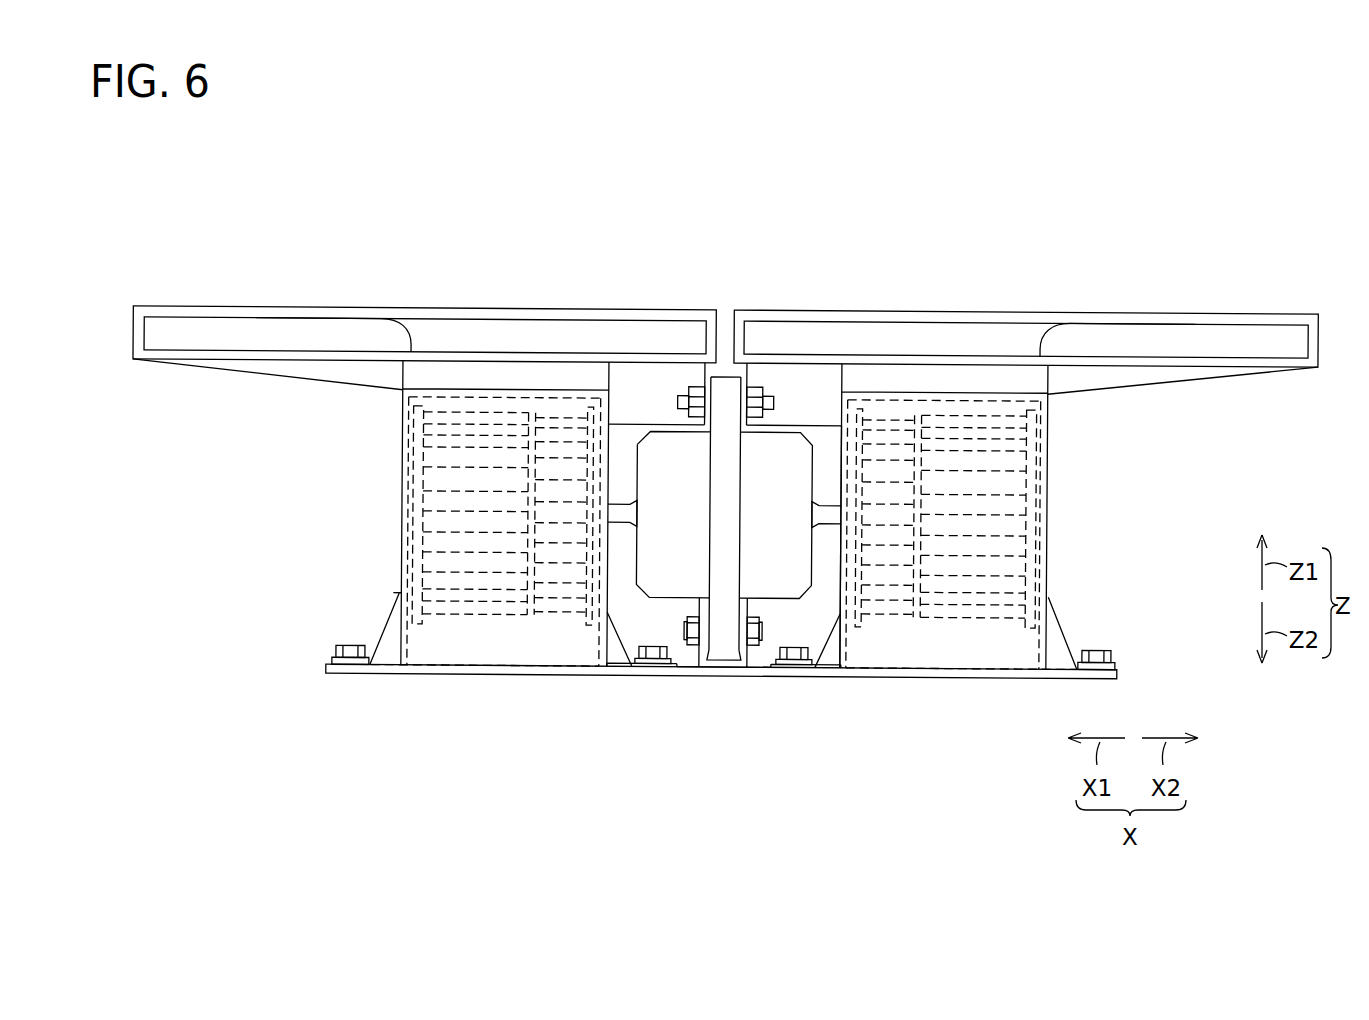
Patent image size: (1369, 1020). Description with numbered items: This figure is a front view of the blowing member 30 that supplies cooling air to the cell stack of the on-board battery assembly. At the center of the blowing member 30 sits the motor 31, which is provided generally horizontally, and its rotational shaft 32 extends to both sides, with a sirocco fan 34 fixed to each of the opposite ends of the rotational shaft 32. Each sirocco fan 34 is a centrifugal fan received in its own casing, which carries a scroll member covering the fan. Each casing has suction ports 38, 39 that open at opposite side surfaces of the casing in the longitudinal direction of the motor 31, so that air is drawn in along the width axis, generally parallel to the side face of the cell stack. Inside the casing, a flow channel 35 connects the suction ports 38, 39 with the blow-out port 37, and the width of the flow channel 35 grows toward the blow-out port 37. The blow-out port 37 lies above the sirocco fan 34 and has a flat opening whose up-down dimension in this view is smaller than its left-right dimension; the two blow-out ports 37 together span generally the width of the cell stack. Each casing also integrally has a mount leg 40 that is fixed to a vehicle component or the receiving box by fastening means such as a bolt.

The blowing member 30 is at (1070, 503).
The motor 31 is at (772, 592).
The rotational shaft 32 is at (840, 605).
The sirocco fan 34 is at (473, 617).
The flow channel 35 is at (266, 338).
The blow-out port 37 is at (232, 326).
The suction port 38 is at (402, 437).
The suction port 39 is at (604, 622).
The mount leg 40 is at (340, 648).